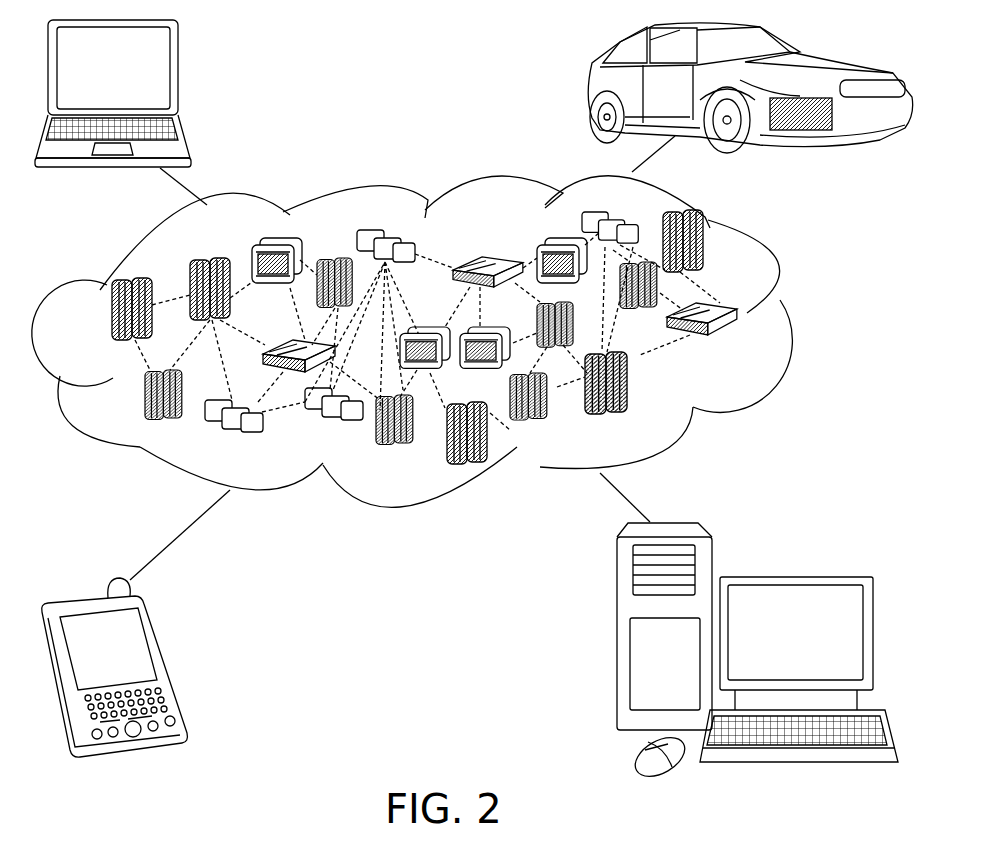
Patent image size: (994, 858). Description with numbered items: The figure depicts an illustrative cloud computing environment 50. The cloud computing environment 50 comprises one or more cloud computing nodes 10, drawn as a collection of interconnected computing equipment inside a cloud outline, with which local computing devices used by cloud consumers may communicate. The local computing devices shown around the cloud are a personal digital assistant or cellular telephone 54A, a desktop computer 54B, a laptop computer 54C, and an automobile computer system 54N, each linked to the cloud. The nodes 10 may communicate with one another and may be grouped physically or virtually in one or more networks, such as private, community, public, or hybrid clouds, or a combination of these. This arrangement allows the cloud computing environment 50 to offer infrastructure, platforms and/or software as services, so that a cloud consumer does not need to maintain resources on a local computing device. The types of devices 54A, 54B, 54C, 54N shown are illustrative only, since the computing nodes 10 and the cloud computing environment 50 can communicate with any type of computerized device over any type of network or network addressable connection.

The cloud computing nodes 10 is at (740, 344).
The cloud computing environment 50 is at (795, 320).
The personal digital assistant (PDA) or cellular telephone 54A is at (152, 662).
The desktop computer 54B is at (795, 576).
The laptop computer 54C is at (178, 72).
The automobile computer system 54N is at (592, 90).